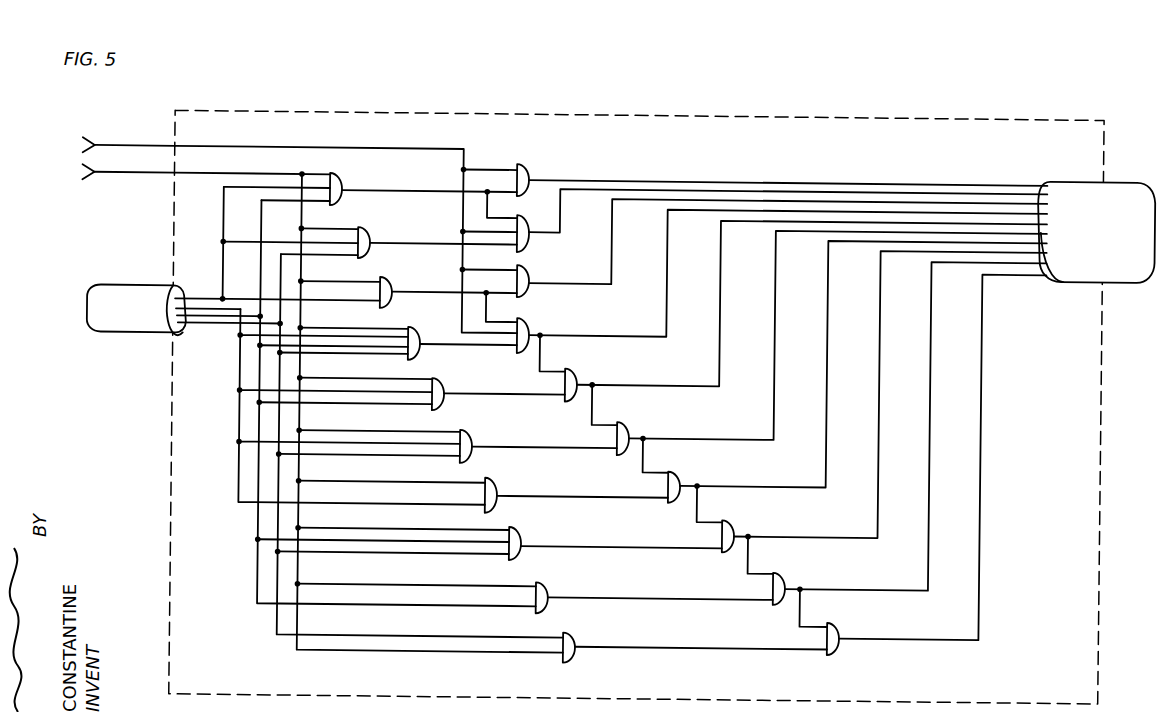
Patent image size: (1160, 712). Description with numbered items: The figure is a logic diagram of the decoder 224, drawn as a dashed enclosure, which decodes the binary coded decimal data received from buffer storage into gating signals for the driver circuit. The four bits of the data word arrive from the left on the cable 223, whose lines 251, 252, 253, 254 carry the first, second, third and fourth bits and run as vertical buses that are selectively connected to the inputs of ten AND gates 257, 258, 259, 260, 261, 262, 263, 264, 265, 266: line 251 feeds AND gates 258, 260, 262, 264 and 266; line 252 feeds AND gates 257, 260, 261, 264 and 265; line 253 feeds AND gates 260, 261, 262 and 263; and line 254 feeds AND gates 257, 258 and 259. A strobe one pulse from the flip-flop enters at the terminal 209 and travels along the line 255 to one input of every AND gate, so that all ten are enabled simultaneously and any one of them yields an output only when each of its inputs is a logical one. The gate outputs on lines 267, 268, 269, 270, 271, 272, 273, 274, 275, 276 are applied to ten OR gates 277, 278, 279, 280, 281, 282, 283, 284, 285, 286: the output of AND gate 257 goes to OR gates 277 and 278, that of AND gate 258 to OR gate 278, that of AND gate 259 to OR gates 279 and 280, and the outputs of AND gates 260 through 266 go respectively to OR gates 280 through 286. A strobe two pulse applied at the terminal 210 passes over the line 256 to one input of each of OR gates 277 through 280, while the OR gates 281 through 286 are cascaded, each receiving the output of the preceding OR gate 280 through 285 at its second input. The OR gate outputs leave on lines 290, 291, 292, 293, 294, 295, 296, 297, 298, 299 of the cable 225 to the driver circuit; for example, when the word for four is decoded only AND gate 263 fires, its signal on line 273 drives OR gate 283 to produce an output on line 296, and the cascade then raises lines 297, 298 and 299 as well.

The terminal 209 is at (84, 180).
The terminal 210 is at (75, 157).
The cable 223 is at (140, 293).
The decoder 224 is at (169, 221).
The cable 225 is at (1100, 185).
The line 251 is at (278, 653).
The line 252 is at (259, 599).
The line 253 is at (235, 499).
The line 254 is at (221, 232).
The line 255 is at (273, 177).
The line 256 is at (227, 149).
The AND gate 257 is at (331, 178).
The AND gate 258 is at (356, 230).
The AND gate 259 is at (379, 279).
The AND gate 260 is at (408, 331).
The AND gate 261 is at (433, 383).
The AND gate 262 is at (461, 433).
The AND gate 263 is at (486, 480).
The AND gate 264 is at (511, 531).
The AND gate 265 is at (538, 585).
The AND gate 266 is at (566, 636).
The output line 267 is at (404, 203).
The output line 268 is at (424, 249).
The output line 269 is at (426, 296).
The output line 270 is at (474, 349).
The output line 271 is at (507, 399).
The output line 272 is at (531, 452).
The line 273 is at (563, 501).
The output line 274 is at (592, 550).
The output line 275 is at (619, 601).
The output line 276 is at (640, 651).
The OR gate 277 is at (517, 164).
The OR gate 278 is at (527, 245).
The OR gate 279 is at (527, 275).
The OR gate 280 is at (528, 326).
The OR gate 281 is at (575, 373).
The OR gate 282 is at (625, 426).
The OR gate 283 is at (678, 473).
The OR gate 284 is at (732, 522).
The OR gate 285 is at (783, 574).
The OR gate 286 is at (837, 623).
The line 290 is at (542, 181).
The line 291 is at (559, 203).
The line 292 is at (611, 240).
The line 293 is at (540, 348).
The line 294 is at (592, 399).
The line 295 is at (644, 449).
The line 296 is at (698, 495).
The line 297 is at (750, 542).
The line 298 is at (802, 599).
The line 299 is at (982, 505).